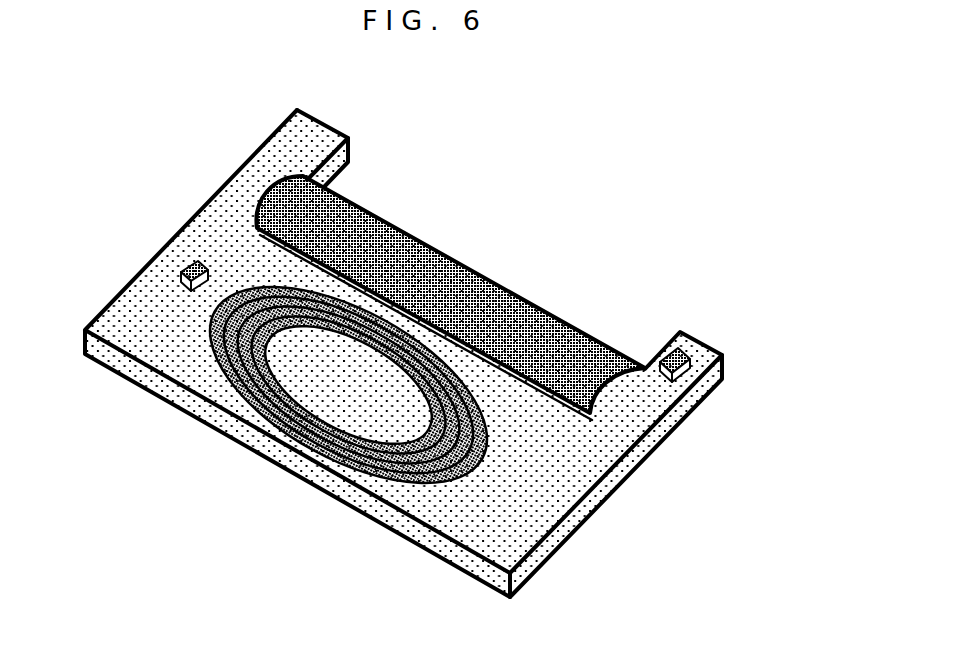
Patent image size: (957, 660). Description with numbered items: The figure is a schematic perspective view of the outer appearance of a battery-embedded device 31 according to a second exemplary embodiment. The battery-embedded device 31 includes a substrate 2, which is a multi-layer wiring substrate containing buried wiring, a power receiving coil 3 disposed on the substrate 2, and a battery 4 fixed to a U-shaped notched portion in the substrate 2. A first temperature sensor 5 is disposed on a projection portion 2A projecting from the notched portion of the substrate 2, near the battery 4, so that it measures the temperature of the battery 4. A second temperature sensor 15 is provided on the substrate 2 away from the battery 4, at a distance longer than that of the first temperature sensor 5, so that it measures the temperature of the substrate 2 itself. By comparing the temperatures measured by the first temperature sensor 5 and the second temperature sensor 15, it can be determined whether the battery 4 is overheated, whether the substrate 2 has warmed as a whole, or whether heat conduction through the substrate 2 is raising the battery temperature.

The substrate 2 is at (537, 485).
The projection portion 2A is at (297, 151).
The power receiving coil 3 is at (273, 413).
The battery 4 is at (523, 323).
The first temperature sensor 5 is at (670, 350).
The second temperature sensor 15 is at (178, 280).
The battery-embedded device 31 is at (568, 175).